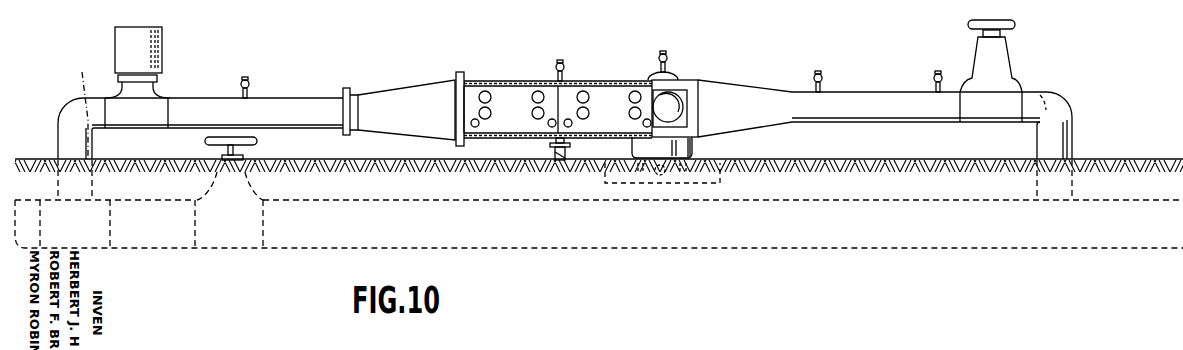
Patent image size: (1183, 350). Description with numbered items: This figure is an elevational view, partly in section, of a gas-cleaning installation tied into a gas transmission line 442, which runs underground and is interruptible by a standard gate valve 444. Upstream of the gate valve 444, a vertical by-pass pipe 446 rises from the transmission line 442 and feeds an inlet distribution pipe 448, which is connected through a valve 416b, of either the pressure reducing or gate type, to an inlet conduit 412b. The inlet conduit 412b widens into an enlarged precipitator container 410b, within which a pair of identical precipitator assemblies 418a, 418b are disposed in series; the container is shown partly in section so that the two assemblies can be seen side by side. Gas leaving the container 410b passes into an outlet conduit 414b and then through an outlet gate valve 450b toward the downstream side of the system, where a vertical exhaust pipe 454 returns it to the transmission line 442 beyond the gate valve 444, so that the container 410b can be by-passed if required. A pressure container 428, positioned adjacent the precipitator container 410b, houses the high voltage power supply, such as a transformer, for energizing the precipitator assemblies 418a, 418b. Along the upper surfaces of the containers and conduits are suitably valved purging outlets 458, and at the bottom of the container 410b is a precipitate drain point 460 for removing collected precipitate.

The precipitator container 410b is at (515, 80).
The inlet conduit 412b is at (295, 107).
The outlet conduit 414b is at (866, 100).
The valve 416b is at (162, 52).
The precipitator assembly 418a is at (512, 115).
The precipitator assembly 418b is at (603, 115).
The pressure container 428 is at (693, 144).
The gas transmission line 442 is at (698, 238).
The gate valve 444 is at (237, 230).
The vertical by-pass pipe 446 is at (58, 140).
The inlet distribution pipe 448 is at (70, 110).
The outlet gate valve 450b is at (997, 70).
The vertical exhaust pipe 454 is at (1067, 143).
The purging outlets 458 is at (243, 80).
The precipitate drain points 460 is at (553, 160).